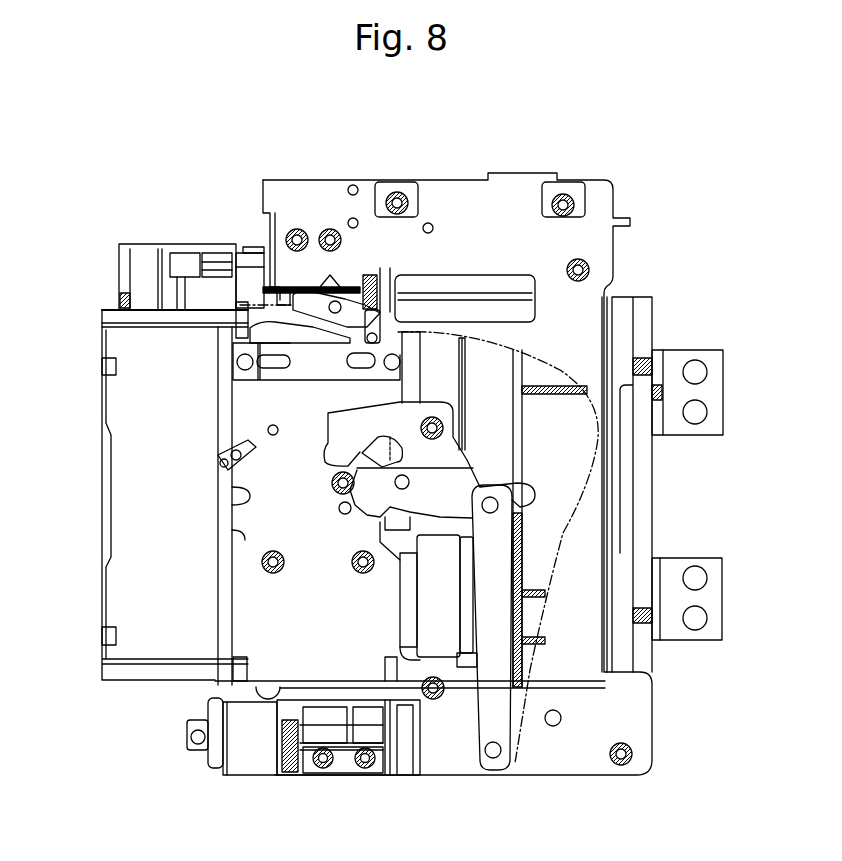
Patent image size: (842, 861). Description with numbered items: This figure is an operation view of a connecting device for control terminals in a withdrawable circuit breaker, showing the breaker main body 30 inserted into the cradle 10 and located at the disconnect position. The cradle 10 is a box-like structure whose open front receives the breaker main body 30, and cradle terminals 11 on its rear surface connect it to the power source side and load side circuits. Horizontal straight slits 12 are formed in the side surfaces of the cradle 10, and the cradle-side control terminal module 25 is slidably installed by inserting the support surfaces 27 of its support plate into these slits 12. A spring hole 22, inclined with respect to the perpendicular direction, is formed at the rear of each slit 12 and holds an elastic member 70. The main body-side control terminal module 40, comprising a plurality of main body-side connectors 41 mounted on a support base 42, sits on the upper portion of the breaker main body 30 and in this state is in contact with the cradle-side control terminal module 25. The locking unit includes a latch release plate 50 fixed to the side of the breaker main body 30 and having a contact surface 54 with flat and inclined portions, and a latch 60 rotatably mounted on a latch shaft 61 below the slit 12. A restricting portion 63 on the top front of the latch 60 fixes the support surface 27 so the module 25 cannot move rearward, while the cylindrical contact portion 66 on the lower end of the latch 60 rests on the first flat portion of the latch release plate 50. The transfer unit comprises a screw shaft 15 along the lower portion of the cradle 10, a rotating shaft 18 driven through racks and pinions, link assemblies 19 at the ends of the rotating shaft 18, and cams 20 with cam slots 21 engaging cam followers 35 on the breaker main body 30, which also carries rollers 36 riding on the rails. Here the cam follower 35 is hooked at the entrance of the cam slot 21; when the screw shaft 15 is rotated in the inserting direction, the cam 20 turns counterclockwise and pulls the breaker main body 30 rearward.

The cradle 10 is at (593, 248).
The cradle terminals 11 is at (710, 393).
The slits 12 is at (318, 300).
The screw shaft 15 is at (187, 735).
The rotating shaft 18 is at (565, 720).
The link assemblies 19 is at (500, 668).
The cam 20 is at (385, 450).
The cam slot 21 is at (440, 467).
The spring hole 22 is at (365, 277).
The cradle-side control terminal module 25 is at (247, 265).
The support surfaces 27 is at (277, 287).
The breaker main body 30 is at (100, 320).
The cam follower 35 is at (334, 489).
The rollers 36 is at (262, 563).
The main body-side control terminal module 40 is at (172, 205).
The main body-side connectors 41 is at (185, 260).
The support base 42 is at (172, 298).
The latch release plate 50 is at (245, 393).
The contact surface 54 is at (230, 337).
The latch 60 is at (295, 287).
The latch shaft 61 is at (325, 290).
The restricting portion 63 is at (283, 293).
The contact portion 66 is at (418, 323).
The elastic member 70 is at (388, 303).